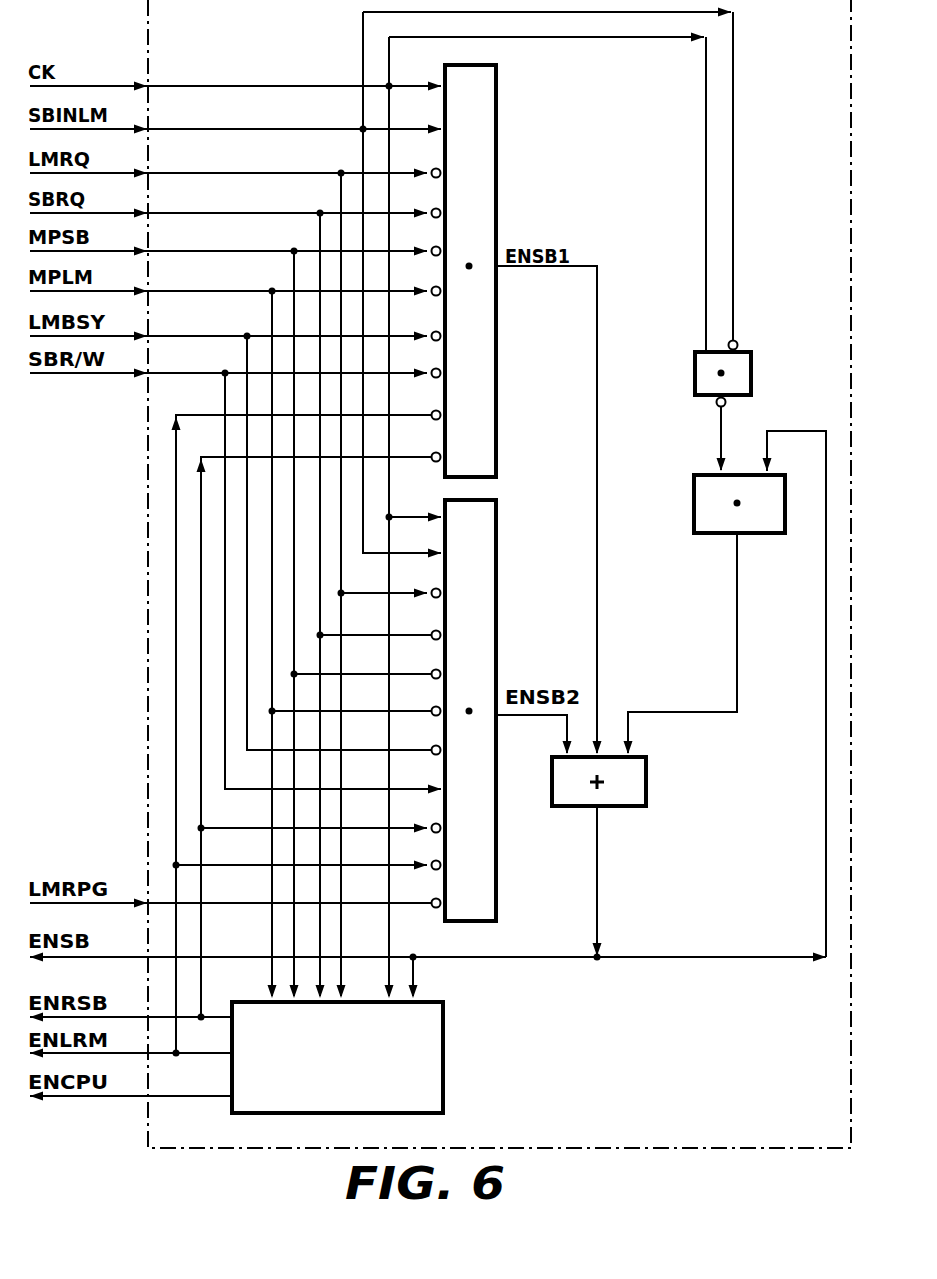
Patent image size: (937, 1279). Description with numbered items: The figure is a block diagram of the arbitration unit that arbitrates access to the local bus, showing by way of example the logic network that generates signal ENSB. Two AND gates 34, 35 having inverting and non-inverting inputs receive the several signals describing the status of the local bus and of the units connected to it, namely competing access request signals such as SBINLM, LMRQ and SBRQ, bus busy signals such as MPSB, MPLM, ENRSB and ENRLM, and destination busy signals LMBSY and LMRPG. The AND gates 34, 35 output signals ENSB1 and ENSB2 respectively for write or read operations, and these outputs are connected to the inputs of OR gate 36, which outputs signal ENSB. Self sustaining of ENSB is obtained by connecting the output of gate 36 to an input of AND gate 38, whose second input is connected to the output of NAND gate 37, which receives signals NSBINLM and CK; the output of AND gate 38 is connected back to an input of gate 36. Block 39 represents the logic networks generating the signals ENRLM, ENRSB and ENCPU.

The AND gate 34 is at (499, 135).
The AND gate 35 is at (499, 531).
The OR gate 36 is at (650, 787).
The NAND gate 37 is at (755, 358).
The AND gate 38 is at (789, 486).
The block 39 is at (447, 1004).